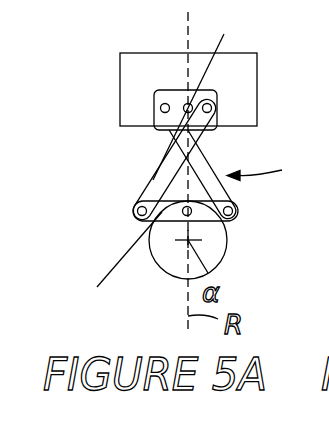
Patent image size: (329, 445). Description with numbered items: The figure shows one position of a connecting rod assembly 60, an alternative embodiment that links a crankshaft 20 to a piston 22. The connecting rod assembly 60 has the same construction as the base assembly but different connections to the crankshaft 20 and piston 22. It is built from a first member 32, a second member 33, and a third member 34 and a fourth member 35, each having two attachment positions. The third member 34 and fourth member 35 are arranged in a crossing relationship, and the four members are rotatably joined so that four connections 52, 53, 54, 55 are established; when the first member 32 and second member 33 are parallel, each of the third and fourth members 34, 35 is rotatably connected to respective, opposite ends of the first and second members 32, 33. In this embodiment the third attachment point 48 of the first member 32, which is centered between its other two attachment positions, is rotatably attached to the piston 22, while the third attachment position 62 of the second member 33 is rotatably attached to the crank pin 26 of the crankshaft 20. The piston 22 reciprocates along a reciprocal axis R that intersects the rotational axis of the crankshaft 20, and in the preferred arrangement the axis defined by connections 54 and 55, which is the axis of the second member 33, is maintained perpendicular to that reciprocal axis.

The crankshaft 20 is at (218, 250).
The piston 22 is at (241, 70).
The crank pin 26 is at (103, 268).
The first member 32 is at (155, 93).
The second member 33 is at (236, 203).
The third member 34 is at (167, 153).
The fourth member 35 is at (201, 158).
The third attachment point 48 is at (199, 97).
The connection 52 is at (160, 108).
The connection 53 is at (215, 99).
The connection 54 is at (137, 212).
The connection 55 is at (232, 213).
The connecting rod assembly 60 is at (272, 164).
The third attachment position 62 is at (103, 268).